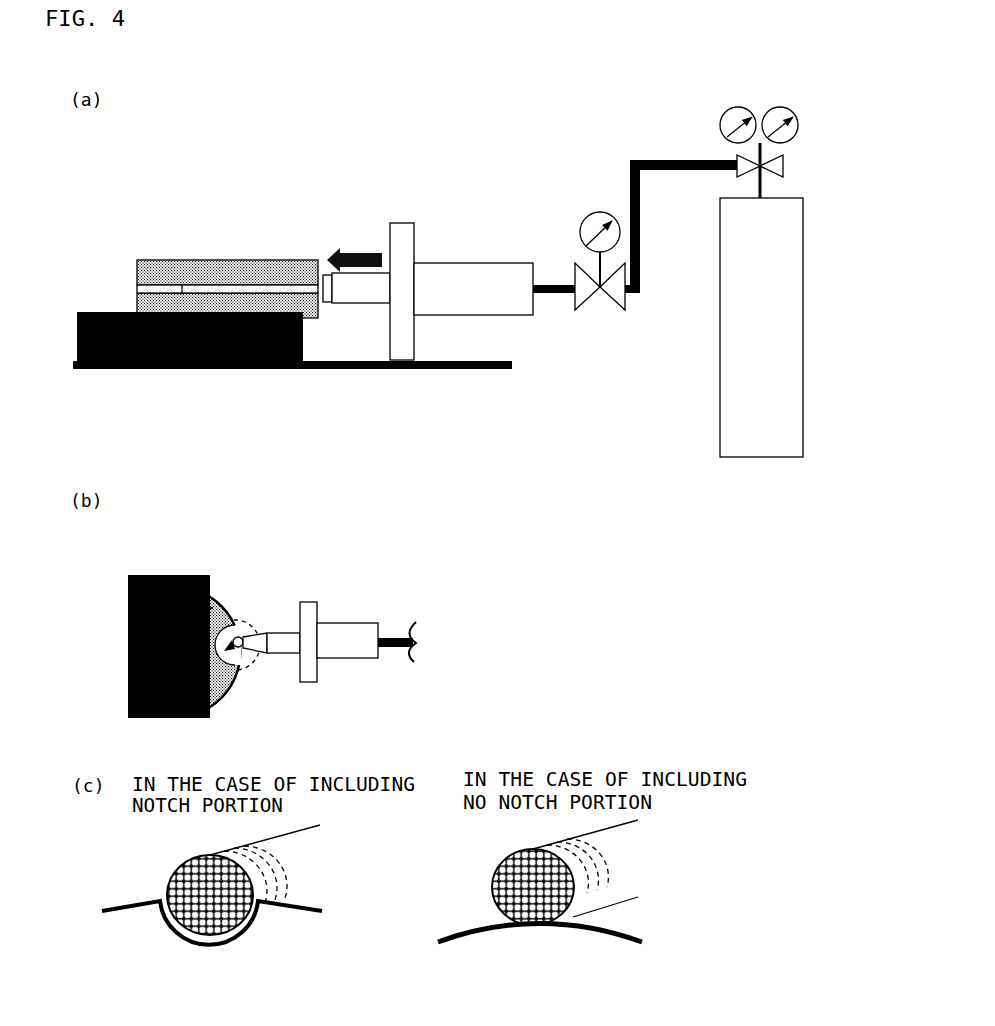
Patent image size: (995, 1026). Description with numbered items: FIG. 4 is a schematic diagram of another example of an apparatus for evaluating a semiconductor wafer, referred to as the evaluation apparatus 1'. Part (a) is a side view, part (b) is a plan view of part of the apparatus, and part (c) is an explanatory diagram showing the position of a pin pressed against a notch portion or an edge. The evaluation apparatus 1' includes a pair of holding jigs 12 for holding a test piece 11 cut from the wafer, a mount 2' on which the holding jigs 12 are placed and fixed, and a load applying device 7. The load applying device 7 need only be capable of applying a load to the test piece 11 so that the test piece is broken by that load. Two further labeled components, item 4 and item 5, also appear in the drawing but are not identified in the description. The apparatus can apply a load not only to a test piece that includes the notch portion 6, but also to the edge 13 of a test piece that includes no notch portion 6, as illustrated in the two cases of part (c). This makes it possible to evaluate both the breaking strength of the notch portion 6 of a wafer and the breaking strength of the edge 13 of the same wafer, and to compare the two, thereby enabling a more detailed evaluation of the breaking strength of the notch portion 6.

The evaluation apparatus 1' is at (292, 237).
The mount 2' is at (190, 491).
The nozzle 4 is at (345, 287).
The gas jet 5 is at (320, 258).
The notch portion 6 is at (228, 682).
The load applying device 7 is at (525, 228).
The test piece 11 is at (222, 288).
The holding jigs 12 is at (137, 300).
The edge 13 is at (630, 935).